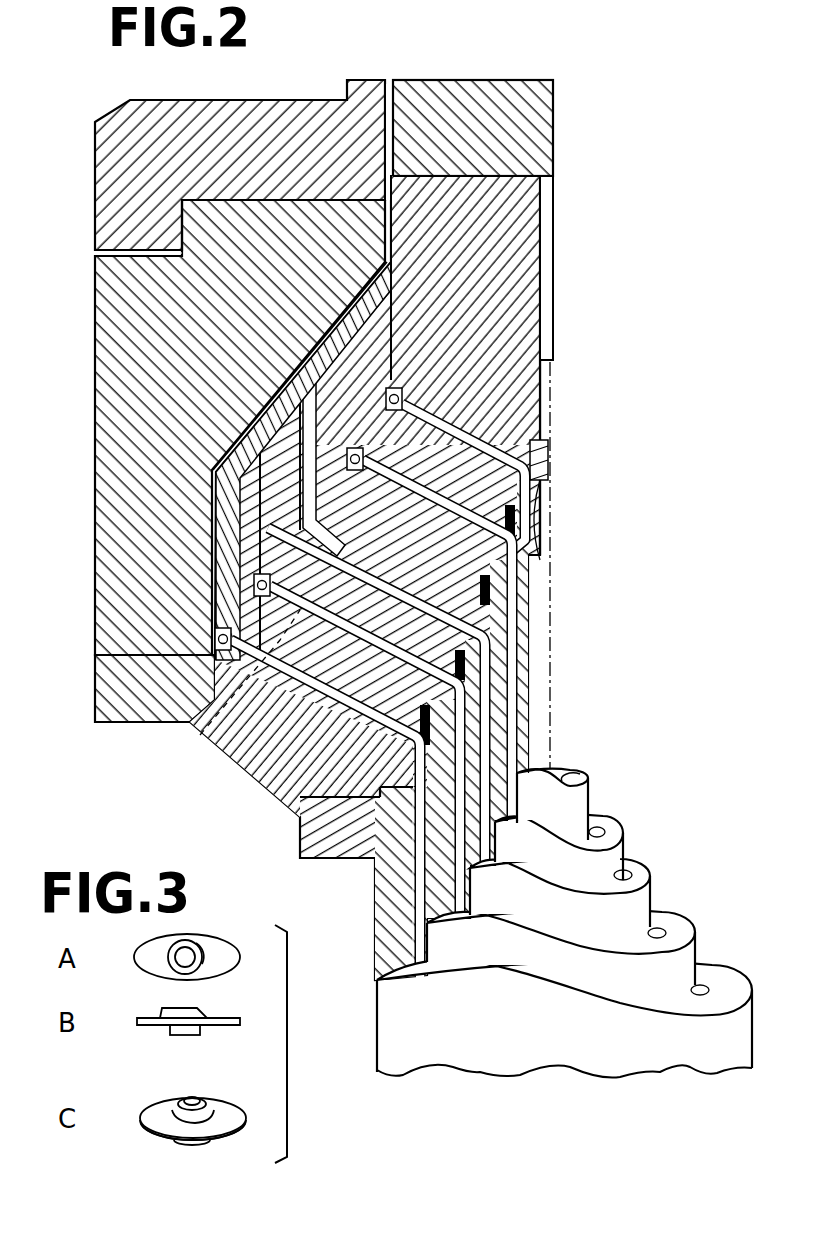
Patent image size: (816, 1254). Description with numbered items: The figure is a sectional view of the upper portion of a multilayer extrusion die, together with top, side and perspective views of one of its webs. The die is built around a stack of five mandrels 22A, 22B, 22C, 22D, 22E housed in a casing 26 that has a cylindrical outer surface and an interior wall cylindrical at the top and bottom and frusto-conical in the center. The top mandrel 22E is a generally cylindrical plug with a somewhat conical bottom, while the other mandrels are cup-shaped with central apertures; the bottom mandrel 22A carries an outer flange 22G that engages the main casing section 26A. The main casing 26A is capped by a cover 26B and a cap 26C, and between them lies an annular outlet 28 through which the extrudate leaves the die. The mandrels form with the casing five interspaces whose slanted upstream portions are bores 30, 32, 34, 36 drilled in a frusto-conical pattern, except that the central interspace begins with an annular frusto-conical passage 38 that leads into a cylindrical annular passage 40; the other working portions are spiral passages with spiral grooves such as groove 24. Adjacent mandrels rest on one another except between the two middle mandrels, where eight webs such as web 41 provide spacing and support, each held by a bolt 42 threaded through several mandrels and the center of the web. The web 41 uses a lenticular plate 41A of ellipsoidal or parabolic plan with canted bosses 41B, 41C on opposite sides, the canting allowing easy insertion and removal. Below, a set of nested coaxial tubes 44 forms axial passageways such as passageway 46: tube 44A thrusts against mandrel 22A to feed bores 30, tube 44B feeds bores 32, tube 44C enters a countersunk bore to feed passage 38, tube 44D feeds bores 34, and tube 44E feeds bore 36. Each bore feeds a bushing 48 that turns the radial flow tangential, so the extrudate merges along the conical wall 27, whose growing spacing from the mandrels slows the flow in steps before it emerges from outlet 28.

In FIG. 2, the mandrel 22A is at (235, 520).
In FIG. 2, the mandrel 22B is at (235, 482).
In FIG. 2, the mandrel 22C is at (298, 365).
In FIG. 2, the mandrel 22D is at (440, 308).
In FIG. 2, the mandrel 22E is at (520, 245).
In FIG. 2, the outer flange 22G is at (118, 705).
In FIG. 2, the spiral groove 24 is at (395, 310).
In FIG. 2, the casing 26 is at (88, 254).
In FIG. 2, the main casing section 26A is at (120, 606).
In FIG. 2, the cover 26B is at (120, 162).
In FIG. 2, the cap 26C is at (492, 105).
In FIG. 2, the conical wall 27 is at (365, 278).
In FIG. 2, the annular outlet 28 is at (388, 76).
In FIG. 2, the bore 30 is at (300, 835).
In FIG. 2, the bore 32 is at (200, 690).
In FIG. 2, the bore 34 is at (495, 450).
In FIG. 2, the bore 36 is at (404, 400).
In FIG. 2, the frusto-conical passage 38 is at (520, 526).
In FIG. 2, the annular passage 40 is at (258, 448).
In FIG. 2, the web 41 is at (480, 632).
In FIG. 2, the bolt 42 is at (250, 740).
In FIG. 2, the nested tubes 44 is at (662, 826).
In FIG. 2, the tube 44A is at (390, 950).
In FIG. 2, the tube 44B is at (420, 875).
In FIG. 2, the tube 44C is at (470, 735).
In FIG. 2, the tube 44D is at (497, 676).
In FIG. 2, the tube 44E is at (525, 562).
In FIG. 2, the axial passageway 46 is at (516, 705).
In FIG. 2, the bushing 48 is at (175, 700).
In FIG. 3, the lenticular plate 41A is at (248, 960).
In FIG. 3, the boss 41B is at (196, 1048).
In FIG. 3, the boss 41C is at (168, 963).